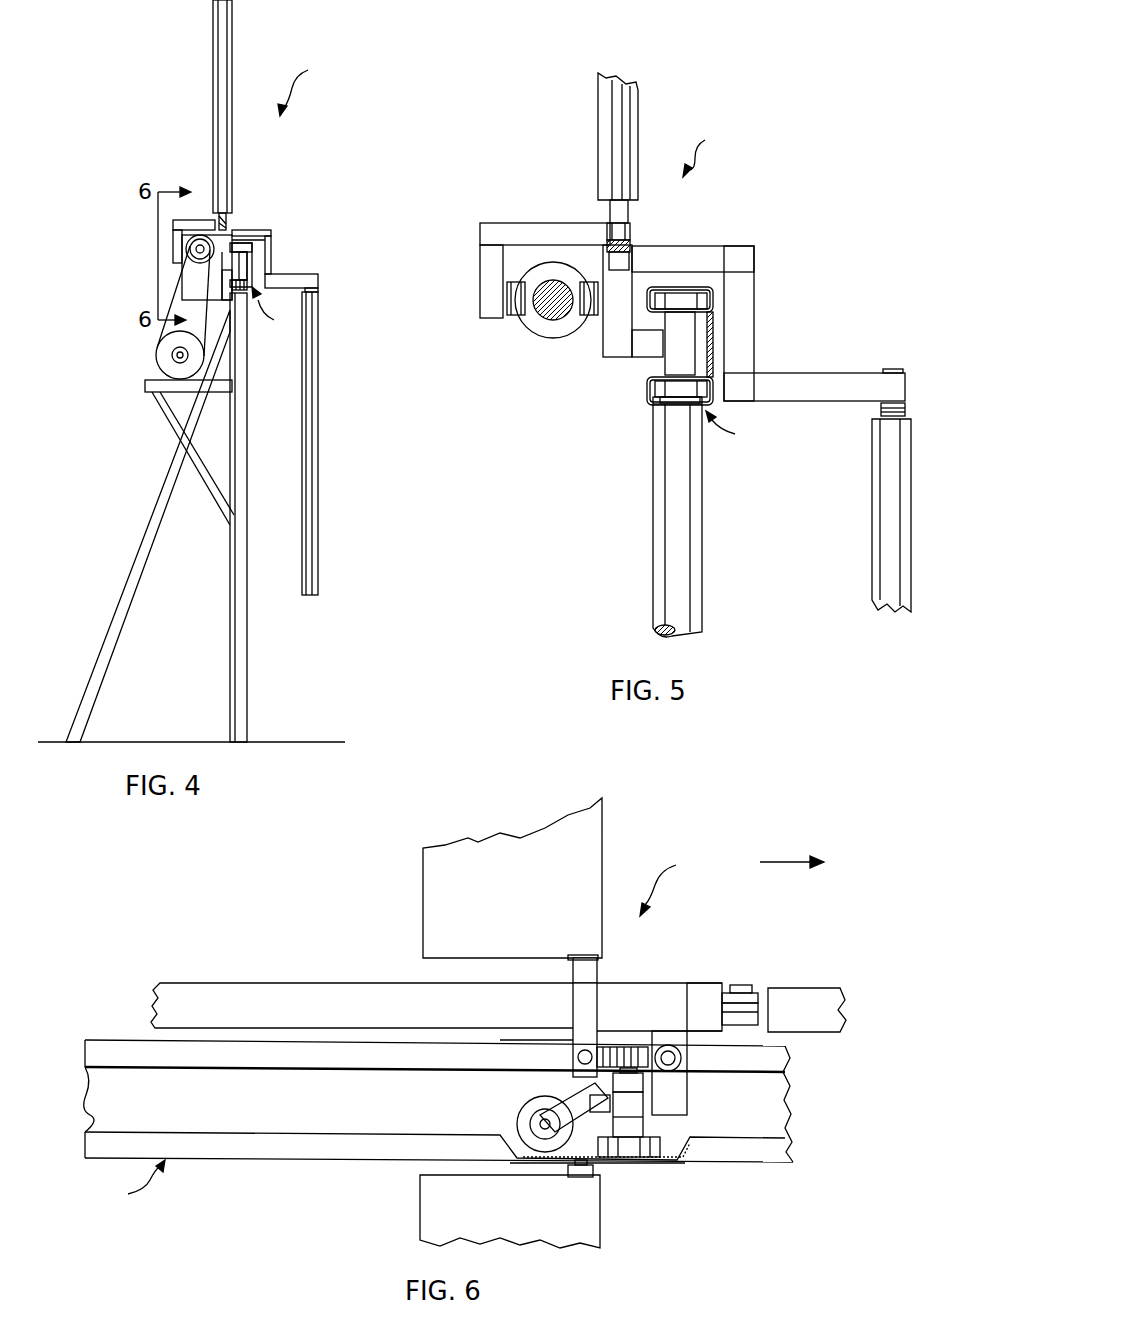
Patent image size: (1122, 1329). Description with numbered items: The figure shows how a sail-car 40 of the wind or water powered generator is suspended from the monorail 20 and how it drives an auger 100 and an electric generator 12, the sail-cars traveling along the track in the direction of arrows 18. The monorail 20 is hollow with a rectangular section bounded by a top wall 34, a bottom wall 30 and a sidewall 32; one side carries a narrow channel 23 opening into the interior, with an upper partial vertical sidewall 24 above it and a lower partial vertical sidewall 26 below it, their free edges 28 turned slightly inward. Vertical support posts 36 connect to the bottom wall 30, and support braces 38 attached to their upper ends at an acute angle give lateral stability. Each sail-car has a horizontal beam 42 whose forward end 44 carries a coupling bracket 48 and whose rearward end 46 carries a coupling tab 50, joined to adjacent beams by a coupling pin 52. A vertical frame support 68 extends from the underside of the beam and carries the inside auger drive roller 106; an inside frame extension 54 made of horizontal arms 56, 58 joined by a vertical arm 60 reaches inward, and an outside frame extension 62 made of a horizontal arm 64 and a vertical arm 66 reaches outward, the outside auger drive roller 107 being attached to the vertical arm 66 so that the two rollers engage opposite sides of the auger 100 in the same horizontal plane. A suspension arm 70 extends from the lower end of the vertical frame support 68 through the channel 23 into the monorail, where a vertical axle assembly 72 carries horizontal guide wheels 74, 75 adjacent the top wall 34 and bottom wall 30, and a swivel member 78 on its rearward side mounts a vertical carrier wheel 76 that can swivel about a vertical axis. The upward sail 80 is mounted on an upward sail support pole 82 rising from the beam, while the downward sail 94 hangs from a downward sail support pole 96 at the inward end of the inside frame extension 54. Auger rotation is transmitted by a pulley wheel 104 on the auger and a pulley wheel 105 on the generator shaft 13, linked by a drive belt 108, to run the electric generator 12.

In FIG. 4, the electric generator 12 is at (160, 352).
In FIG. 4, the shaft 13 is at (172, 358).
In FIG. 6, the arrows 18 is at (790, 860).
In FIG. 4, the monorail 20 is at (275, 308).
In FIG. 5, the monorail 20 is at (732, 428).
In FIG. 6, the monorail 20 is at (132, 1182).
In FIG. 4, the channel 23 is at (210, 287).
In FIG. 5, the channel 23 is at (658, 364).
In FIG. 6, the channel 23 is at (98, 1104).
In FIG. 5, the upper partial vertical sidewall 24 is at (650, 298).
In FIG. 6, the upper partial vertical sidewall 24 is at (95, 1052).
In FIG. 5, the lower partial vertical sidewall 26 is at (650, 400).
In FIG. 6, the lower partial vertical sidewall 26 is at (100, 1143).
In FIG. 5, the free edges 28 is at (656, 304).
In FIG. 4, the bottom wall 30 is at (243, 291).
In FIG. 5, the bottom wall 30 is at (680, 408).
In FIG. 6, the bottom wall 30 is at (640, 1165).
In FIG. 4, the sidewall 32 is at (254, 262).
In FIG. 5, the sidewall 32 is at (674, 351).
In FIG. 6, the sidewall 32 is at (441, 1101).
In FIG. 4, the top wall 34 is at (234, 240).
In FIG. 6, the top wall 34 is at (545, 1040).
In FIG. 4, the support posts 36 is at (238, 675).
In FIG. 5, the support posts 36 is at (680, 558).
In FIG. 4, the support braces 38 is at (110, 640).
In FIG. 4, the sail-car 40 is at (306, 85).
In FIG. 5, the sail-car 40 is at (707, 152).
In FIG. 6, the sail-car 40 is at (670, 883).
In FIG. 6, the horizontal beam 42 is at (218, 982).
In FIG. 6, the forward end 44 is at (712, 983).
In FIG. 6, the rearward end 46 is at (778, 988).
In FIG. 4, the coupling bracket 48 is at (240, 243).
In FIG. 5, the coupling bracket 48 is at (631, 230).
In FIG. 6, the coupling bracket 48 is at (722, 998).
In FIG. 5, the coupling tab 50 is at (631, 246).
In FIG. 6, the coupling tab 50 is at (745, 1012).
In FIG. 5, the coupling pin 52 is at (630, 225).
In FIG. 6, the coupling pin 52 is at (745, 983).
In FIG. 4, the inside frame extension 54 is at (305, 243).
In FIG. 5, the inside frame extension 54 is at (768, 291).
In FIG. 4, the horizontal arm 56 is at (262, 232).
In FIG. 5, the horizontal arm 56 is at (695, 245).
In FIG. 4, the horizontal arm 58 is at (300, 278).
In FIG. 5, the horizontal arm 58 is at (800, 373).
In FIG. 4, the vertical arm 60 is at (270, 245).
In FIG. 5, the vertical arm 60 is at (758, 292).
In FIG. 4, the outside frame extension 62 is at (160, 228).
In FIG. 5, the outside frame extension 62 is at (515, 249).
In FIG. 6, the outside frame extension 62 is at (575, 1000).
In FIG. 4, the horizontal arm 64 is at (194, 220).
In FIG. 5, the horizontal arm 64 is at (545, 222).
In FIG. 4, the vertical arm 66 is at (170, 247).
In FIG. 5, the vertical arm 66 is at (485, 270).
In FIG. 4, the vertical frame support 68 is at (215, 278).
In FIG. 5, the vertical frame support 68 is at (615, 333).
In FIG. 6, the vertical frame support 68 is at (672, 1095).
In FIG. 4, the suspension arm 70 is at (226, 280).
In FIG. 5, the suspension arm 70 is at (622, 358).
In FIG. 6, the suspension arm 70 is at (630, 1100).
In FIG. 4, the vertical axle assembly 72 is at (250, 272).
In FIG. 5, the vertical axle assembly 72 is at (690, 340).
In FIG. 6, the vertical axle assembly 72 is at (613, 1080).
In FIG. 6, the horizontal guide wheel 74 is at (622, 1050).
In FIG. 5, the horizontal guide wheel 75 is at (672, 410).
In FIG. 6, the horizontal guide wheel 75 is at (655, 1165).
In FIG. 6, the vertical carrier wheel 76 is at (522, 1118).
In FIG. 6, the swivel member 78 is at (604, 1110).
In FIG. 4, the sail 80 is at (222, 28).
In FIG. 5, the sail 80 is at (640, 115).
In FIG. 6, the sail 80 is at (519, 893).
In FIG. 4, the upward sail support pole 82 is at (219, 218).
In FIG. 5, the upward sail support pole 82 is at (610, 212).
In FIG. 6, the upward sail support pole 82 is at (598, 975).
In FIG. 4, the downward sail 94 is at (310, 560).
In FIG. 5, the downward sail 94 is at (890, 522).
In FIG. 6, the downward sail 94 is at (519, 1218).
In FIG. 4, the downward sail support pole 96 is at (320, 290).
In FIG. 5, the downward sail support pole 96 is at (906, 408).
In FIG. 6, the downward sail support pole 96 is at (597, 1172).
In FIG. 4, the auger 100 is at (190, 240).
In FIG. 5, the auger 100 is at (545, 335).
In FIG. 4, the pulley wheel 104 is at (196, 257).
In FIG. 4, the pulley wheel 105 is at (148, 382).
In FIG. 5, the inside auger drive roller 106 is at (566, 290).
In FIG. 6, the inside auger drive roller 106 is at (668, 1045).
In FIG. 5, the outside auger drive roller 107 is at (515, 318).
In FIG. 6, the outside auger drive roller 107 is at (577, 1057).
In FIG. 4, the drive belt 108 is at (200, 275).